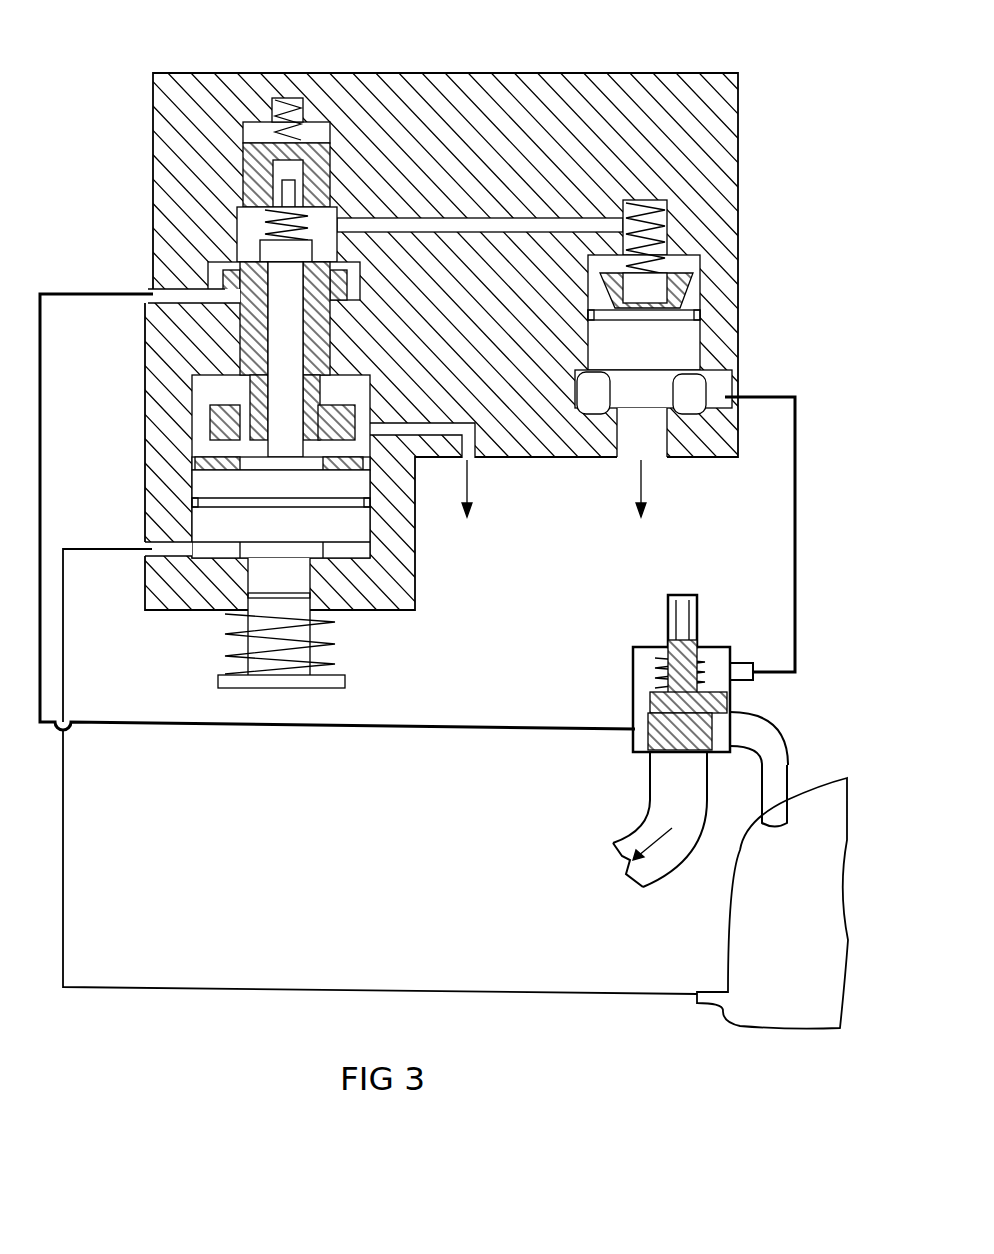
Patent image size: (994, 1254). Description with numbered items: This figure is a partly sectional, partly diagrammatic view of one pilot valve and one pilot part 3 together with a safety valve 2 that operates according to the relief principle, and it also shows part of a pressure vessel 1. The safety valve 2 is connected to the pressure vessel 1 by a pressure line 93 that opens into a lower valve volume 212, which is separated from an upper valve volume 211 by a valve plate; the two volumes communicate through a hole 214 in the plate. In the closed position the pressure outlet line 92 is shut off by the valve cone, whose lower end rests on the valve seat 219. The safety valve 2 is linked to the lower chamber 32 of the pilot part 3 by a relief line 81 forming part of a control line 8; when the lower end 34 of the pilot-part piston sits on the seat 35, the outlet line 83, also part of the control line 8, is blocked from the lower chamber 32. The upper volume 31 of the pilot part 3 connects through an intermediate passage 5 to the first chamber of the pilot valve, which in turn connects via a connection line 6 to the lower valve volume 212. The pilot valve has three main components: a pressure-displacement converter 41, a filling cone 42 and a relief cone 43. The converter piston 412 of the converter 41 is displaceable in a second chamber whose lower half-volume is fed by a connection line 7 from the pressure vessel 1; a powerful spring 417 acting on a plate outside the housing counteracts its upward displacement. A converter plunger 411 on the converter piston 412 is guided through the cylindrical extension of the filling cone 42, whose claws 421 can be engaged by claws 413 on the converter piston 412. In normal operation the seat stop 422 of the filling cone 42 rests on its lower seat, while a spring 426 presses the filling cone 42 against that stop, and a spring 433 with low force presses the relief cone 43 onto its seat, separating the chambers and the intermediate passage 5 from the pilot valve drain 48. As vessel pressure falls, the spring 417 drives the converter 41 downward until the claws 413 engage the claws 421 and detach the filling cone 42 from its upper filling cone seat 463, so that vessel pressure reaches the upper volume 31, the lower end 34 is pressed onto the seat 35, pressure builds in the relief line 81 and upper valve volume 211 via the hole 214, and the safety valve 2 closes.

The pressure vessel 1 is at (738, 958).
The safety valve 2 is at (643, 603).
The pilot part 3 is at (712, 298).
The intermediate passage 5 is at (570, 215).
The connection line 6 is at (75, 298).
The connection line 7 is at (297, 990).
The control line 8 is at (784, 473).
The upper volume 31 is at (690, 270).
The lower chamber 32 is at (693, 393).
The lower end 34 is at (688, 372).
The seat 35 is at (607, 418).
The pressure-displacement converter 41 is at (207, 523).
The filling cone 42 is at (262, 262).
The relief cone 43 is at (260, 240).
The pilot valve drain 48 is at (472, 445).
The relief line 81 is at (800, 482).
The outlet line 83 is at (653, 445).
The pressure outlet line 92 is at (658, 873).
The pressure line 93 is at (770, 735).
The upper valve volume 211 is at (647, 660).
The lower valve volume 212 is at (632, 740).
The hole 214 is at (645, 700).
The valve seat 219 is at (640, 737).
The converter plunger 411 is at (278, 290).
The converter piston 412 is at (212, 483).
The claws 413 is at (228, 402).
The spring 417 is at (245, 640).
The claws 421 is at (232, 432).
The seat stop 422 is at (340, 290).
The spring 426 is at (280, 108).
The spring 433 is at (272, 212).
The upper filling cone seat 463 is at (360, 275).